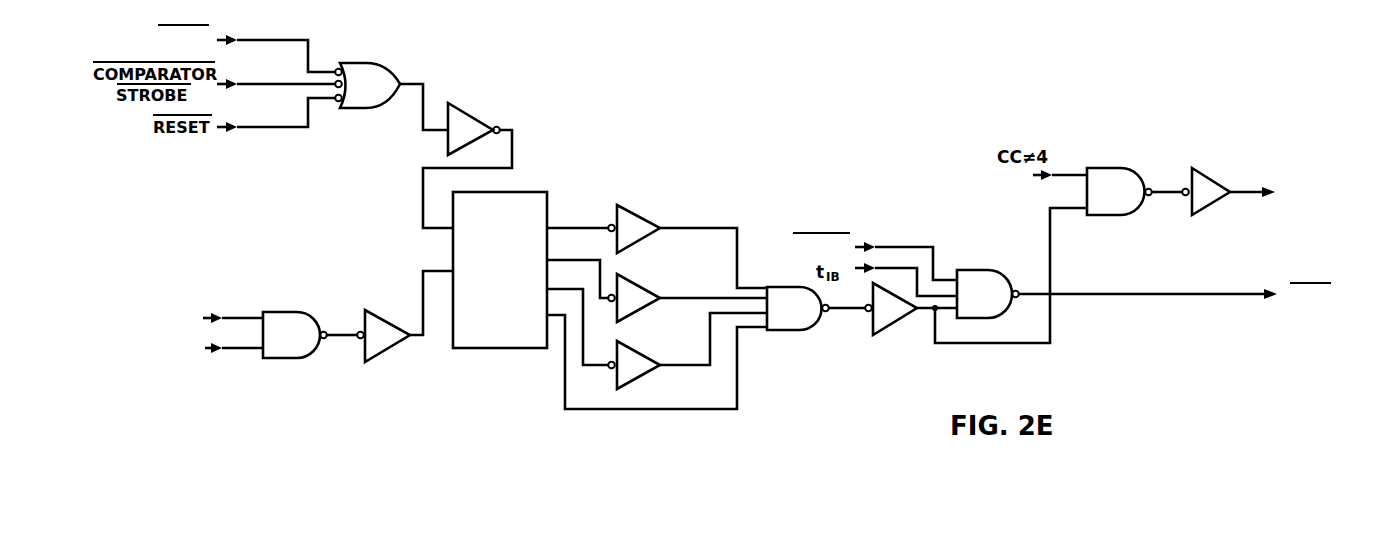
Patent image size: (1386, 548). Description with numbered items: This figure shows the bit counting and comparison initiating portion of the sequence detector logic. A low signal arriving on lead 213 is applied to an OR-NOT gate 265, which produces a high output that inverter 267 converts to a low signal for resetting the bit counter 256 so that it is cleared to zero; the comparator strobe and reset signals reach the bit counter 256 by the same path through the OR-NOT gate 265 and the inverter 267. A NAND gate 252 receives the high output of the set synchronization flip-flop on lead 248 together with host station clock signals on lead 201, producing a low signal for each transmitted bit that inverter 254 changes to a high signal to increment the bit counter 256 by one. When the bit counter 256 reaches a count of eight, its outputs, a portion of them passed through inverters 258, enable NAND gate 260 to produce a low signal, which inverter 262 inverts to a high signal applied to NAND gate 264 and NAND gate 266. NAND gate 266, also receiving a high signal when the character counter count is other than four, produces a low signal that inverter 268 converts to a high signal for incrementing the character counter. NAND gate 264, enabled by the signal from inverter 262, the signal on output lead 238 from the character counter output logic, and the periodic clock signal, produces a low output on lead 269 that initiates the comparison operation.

The lead 213 is at (257, 40).
The OR-NOT gate 265 is at (365, 63).
The inverter 267 is at (462, 108).
The bit counter 256 is at (520, 192).
The lead 201 is at (239, 318).
The lead 248 is at (243, 348).
The NAND gate 252 is at (283, 312).
The inverter 254 is at (386, 349).
The inverters 258 is at (640, 353).
The NAND gate 260 is at (790, 330).
The inverter 262 is at (890, 336).
The output lead 238 is at (895, 247).
The NAND gate 264 is at (973, 270).
The lead 269 is at (1128, 294).
The NAND gate 266 is at (1105, 215).
The inverter 268 is at (1203, 213).